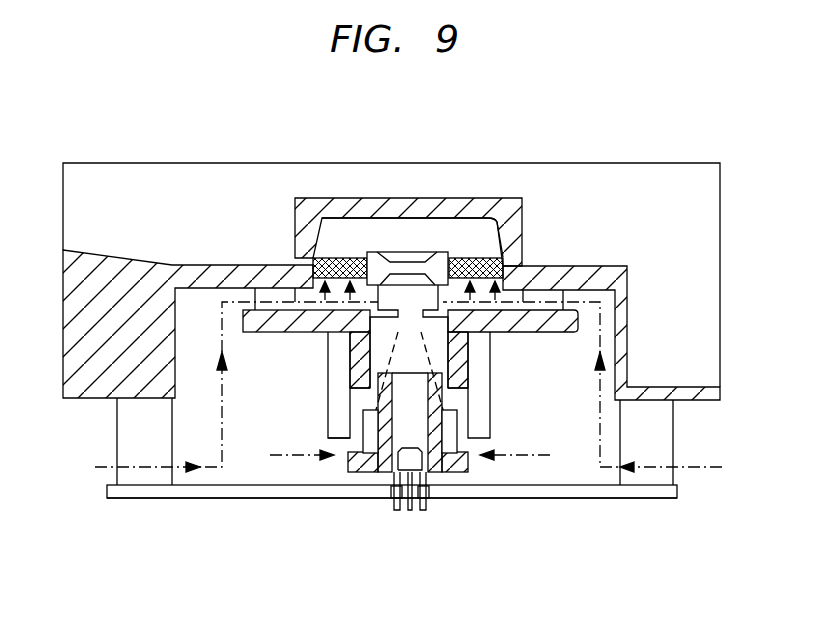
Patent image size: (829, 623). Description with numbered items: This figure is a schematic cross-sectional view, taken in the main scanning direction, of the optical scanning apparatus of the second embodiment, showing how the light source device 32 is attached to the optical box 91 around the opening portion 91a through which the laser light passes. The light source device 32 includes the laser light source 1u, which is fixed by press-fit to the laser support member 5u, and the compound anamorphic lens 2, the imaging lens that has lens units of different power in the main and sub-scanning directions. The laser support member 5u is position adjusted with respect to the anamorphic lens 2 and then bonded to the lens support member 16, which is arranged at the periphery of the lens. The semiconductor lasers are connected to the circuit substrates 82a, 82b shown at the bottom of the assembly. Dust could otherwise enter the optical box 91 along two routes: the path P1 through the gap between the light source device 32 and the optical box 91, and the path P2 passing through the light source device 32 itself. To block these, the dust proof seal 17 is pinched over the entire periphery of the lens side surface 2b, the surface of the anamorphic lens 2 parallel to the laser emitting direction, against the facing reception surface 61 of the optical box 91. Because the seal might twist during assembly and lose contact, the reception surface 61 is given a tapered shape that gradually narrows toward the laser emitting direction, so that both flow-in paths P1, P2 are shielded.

The optical box 91 is at (225, 268).
The opening portion 91a is at (418, 207).
The reception surface 61 is at (493, 218).
The dust proof seal 17 is at (350, 258).
The anamorphic lens 2 is at (377, 255).
The lens side surface 2b is at (365, 258).
The lens support member 16 is at (567, 325).
The light source device 32 is at (330, 372).
The laser light source 1u is at (430, 453).
The laser support member 5u is at (355, 445).
The circuit substrate 82a is at (157, 498).
The circuit substrate 82b is at (392, 547).
The path P1 is at (217, 472).
The path P2 is at (297, 458).